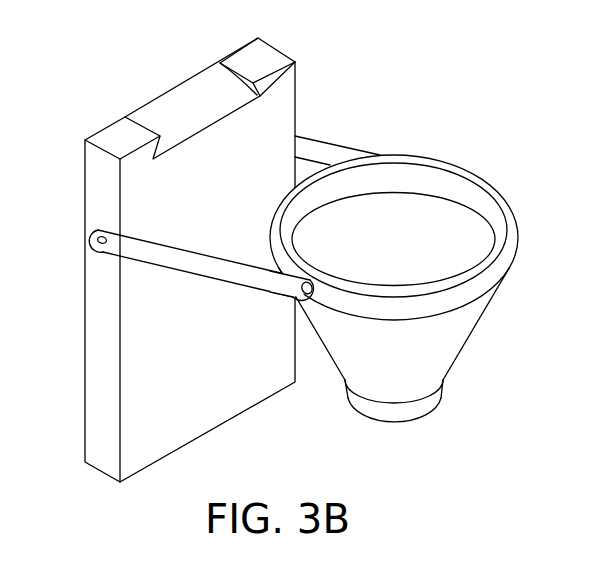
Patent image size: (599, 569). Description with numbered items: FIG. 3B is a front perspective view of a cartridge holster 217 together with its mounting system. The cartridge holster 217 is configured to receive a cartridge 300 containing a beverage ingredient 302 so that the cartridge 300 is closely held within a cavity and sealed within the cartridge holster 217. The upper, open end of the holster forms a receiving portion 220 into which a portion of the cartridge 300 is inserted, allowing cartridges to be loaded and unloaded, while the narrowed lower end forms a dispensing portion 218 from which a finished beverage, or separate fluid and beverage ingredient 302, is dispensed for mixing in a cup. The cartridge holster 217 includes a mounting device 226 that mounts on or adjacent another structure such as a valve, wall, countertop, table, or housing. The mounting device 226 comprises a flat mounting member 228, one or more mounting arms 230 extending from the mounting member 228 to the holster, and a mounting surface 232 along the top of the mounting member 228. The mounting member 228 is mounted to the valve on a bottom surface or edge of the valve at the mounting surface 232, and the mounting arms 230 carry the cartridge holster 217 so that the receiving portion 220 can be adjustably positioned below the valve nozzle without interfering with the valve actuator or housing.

The mounting device 226 is at (158, 245).
The mounting member 228 is at (235, 216).
The mounting surface 232 is at (188, 107).
The mounting arm 230 is at (320, 150).
The cartridge holster 217 is at (394, 293).
The receiving portion 220 is at (477, 172).
The cartridge 300 is at (400, 208).
The beverage ingredient 302 is at (413, 253).
The dispensing portion 218 is at (408, 415).